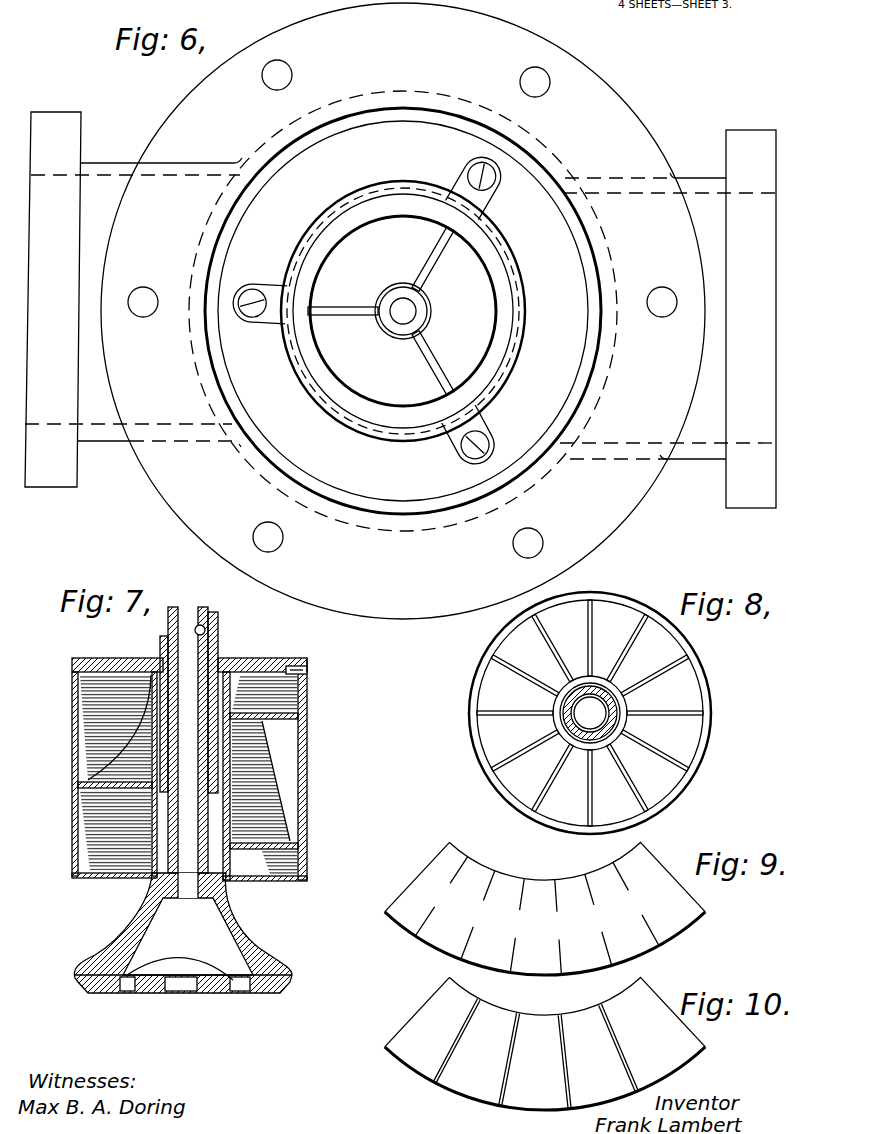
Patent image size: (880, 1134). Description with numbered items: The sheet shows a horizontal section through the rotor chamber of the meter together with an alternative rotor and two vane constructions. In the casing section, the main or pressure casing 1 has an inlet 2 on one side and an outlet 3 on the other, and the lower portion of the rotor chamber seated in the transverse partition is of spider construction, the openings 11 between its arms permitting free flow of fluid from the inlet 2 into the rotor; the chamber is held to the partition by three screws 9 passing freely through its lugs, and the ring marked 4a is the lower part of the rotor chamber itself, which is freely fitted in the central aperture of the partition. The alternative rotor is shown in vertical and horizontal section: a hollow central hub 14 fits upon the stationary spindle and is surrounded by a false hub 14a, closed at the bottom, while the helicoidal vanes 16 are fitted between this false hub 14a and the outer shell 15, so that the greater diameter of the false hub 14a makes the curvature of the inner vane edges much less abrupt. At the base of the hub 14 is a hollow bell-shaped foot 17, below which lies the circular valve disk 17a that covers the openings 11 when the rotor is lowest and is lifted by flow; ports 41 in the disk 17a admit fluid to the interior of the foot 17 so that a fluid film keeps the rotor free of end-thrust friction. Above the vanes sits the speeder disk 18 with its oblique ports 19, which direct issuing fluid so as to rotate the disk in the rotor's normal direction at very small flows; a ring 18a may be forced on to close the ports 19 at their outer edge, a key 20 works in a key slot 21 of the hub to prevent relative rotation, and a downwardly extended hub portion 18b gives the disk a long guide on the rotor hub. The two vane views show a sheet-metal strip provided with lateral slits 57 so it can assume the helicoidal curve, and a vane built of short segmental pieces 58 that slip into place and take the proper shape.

In FIG. 6, the main or pressure casing 1 is at (403, 311).
In FIG. 6, the inlet 2 is at (133, 299).
In FIG. 6, the outlet 3 is at (668, 319).
In FIG. 6, the inner ring 4a is at (310, 350).
In FIG. 6, the screws 9 is at (490, 185).
In FIG. 6, the openings 11 is at (373, 228).
In FIG. 7, the central hub 14 is at (215, 636).
In FIG. 8, the central hub 14 is at (612, 727).
In FIG. 7, the false hub 14a is at (122, 878).
In FIG. 8, the false hub 14a is at (562, 720).
In FIG. 7, the outer shell 15 is at (306, 752).
In FIG. 8, the outer shell 15 is at (711, 701).
In FIG. 7, the helicoidal vanes 16 is at (300, 715).
In FIG. 8, the helicoidal vanes 16 is at (673, 710).
In FIG. 9, the helicoidal vanes 16 is at (425, 853).
In FIG. 7, the bell-shaped foot 17 is at (232, 937).
In FIG. 7, the valve disk 17a is at (148, 995).
In FIG. 7, the speeder disk 18 is at (114, 658).
In FIG. 7, the ring 18a is at (310, 675).
In FIG. 7, the downwardly extended hub portion 18b is at (220, 698).
In FIG. 8, the downwardly extended hub portion 18b is at (580, 738).
In FIG. 7, the oblique ports 19 is at (298, 667).
In FIG. 7, the key 20 is at (163, 636).
In FIG. 7, the key slot 21 is at (204, 626).
In FIG. 7, the ports 41 is at (195, 970).
In FIG. 9, the slits 57 is at (518, 888).
In FIG. 10, the segmental pieces 58 is at (522, 1075).